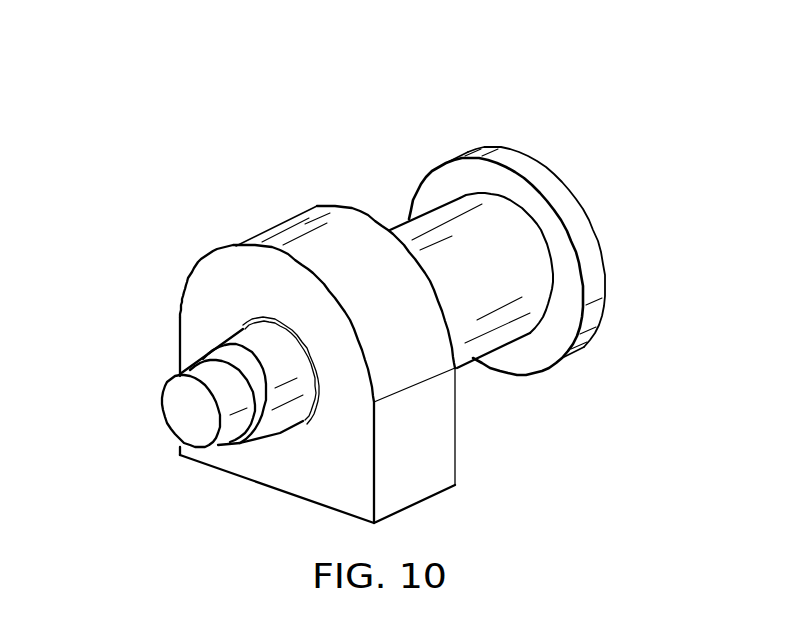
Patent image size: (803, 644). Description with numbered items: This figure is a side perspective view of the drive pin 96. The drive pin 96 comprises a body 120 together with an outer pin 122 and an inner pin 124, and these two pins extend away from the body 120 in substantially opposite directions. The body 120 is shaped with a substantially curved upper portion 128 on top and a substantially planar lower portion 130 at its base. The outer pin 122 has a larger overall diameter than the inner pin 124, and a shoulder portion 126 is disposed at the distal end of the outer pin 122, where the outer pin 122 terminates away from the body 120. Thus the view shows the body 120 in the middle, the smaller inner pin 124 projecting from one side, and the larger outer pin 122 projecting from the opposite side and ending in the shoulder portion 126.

The drive pin 96 is at (285, 114).
The body 120 is at (334, 200).
The outer pin 122 is at (150, 418).
The inner pin 124 is at (496, 222).
The shoulder portion 126 is at (612, 262).
The curved upper portion 128 is at (288, 228).
The planar lower portion 130 is at (278, 490).